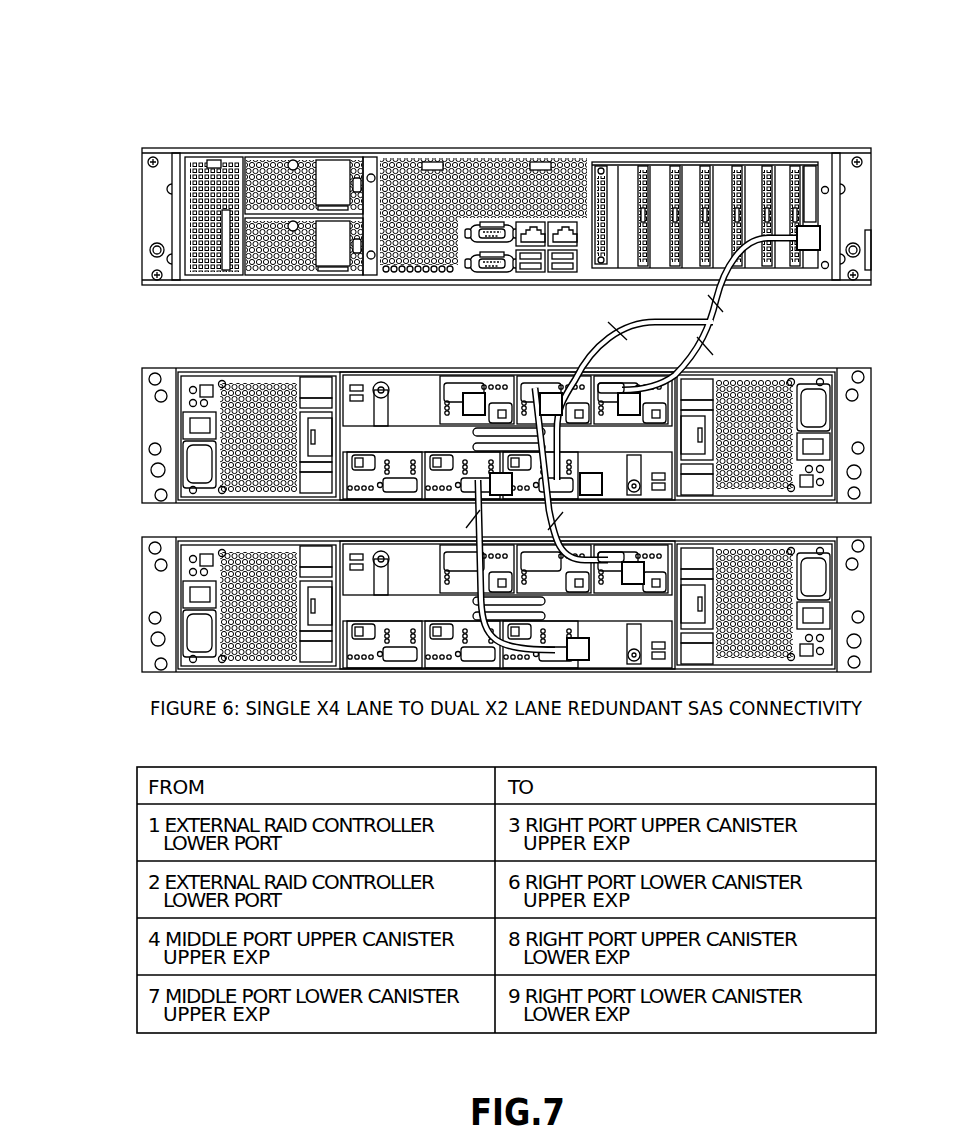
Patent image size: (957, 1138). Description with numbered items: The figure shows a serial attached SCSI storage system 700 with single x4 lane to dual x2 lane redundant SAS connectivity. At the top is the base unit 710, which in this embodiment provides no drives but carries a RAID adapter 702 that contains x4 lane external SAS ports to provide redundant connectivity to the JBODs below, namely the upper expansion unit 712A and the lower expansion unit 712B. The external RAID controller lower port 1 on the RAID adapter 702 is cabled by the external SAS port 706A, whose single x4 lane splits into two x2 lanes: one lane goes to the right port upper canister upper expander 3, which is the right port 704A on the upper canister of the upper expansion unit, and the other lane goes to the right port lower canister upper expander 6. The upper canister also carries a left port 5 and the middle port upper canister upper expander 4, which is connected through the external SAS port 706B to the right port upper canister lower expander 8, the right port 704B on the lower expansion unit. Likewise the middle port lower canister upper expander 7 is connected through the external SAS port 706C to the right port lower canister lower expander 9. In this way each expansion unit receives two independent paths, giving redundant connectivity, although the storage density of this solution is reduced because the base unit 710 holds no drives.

The serial attached SCSI storage system 700 is at (76, 49).
The RAID adapter 702 is at (806, 172).
The base unit 710 is at (141, 220).
The upper expansion unit 712A is at (148, 425).
The lower expansion unit 712B is at (148, 594).
The right port 704A is at (608, 386).
The right port 704B is at (580, 542).
The external SAS port 706A is at (745, 260).
The external SAS port 706B is at (514, 374).
The external SAS port 706C is at (637, 560).
The external RAID controller lower port 1 is at (808, 238).
The right port upper canister upper expander 3 is at (629, 404).
The middle port upper canister upper expander 4 is at (551, 404).
The left port upper canister upper expander 5 is at (474, 404).
The right port lower canister upper expander 6 is at (591, 484).
The middle port lower canister upper expander 7 is at (501, 484).
The right port upper canister lower expander 8 is at (633, 573).
The right port lower canister lower expander 9 is at (578, 649).